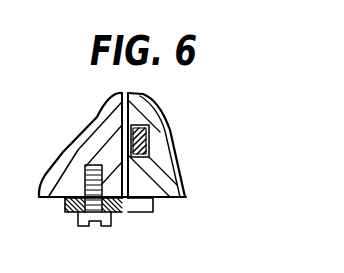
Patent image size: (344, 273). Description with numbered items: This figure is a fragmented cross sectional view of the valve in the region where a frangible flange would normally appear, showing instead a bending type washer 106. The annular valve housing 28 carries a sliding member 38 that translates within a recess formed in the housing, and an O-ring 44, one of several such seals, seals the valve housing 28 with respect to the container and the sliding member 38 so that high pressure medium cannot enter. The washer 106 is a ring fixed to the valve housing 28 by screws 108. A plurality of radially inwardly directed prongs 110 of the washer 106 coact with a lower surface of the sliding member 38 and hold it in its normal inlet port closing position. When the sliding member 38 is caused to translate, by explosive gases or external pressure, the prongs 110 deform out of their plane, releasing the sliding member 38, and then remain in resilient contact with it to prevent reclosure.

The valve housing 28 is at (94, 141).
The sliding member 38 is at (168, 182).
The O-ring 44 is at (149, 139).
The bending type washer 106 is at (70, 213).
The screws 108 is at (104, 226).
The prongs 110 is at (145, 207).